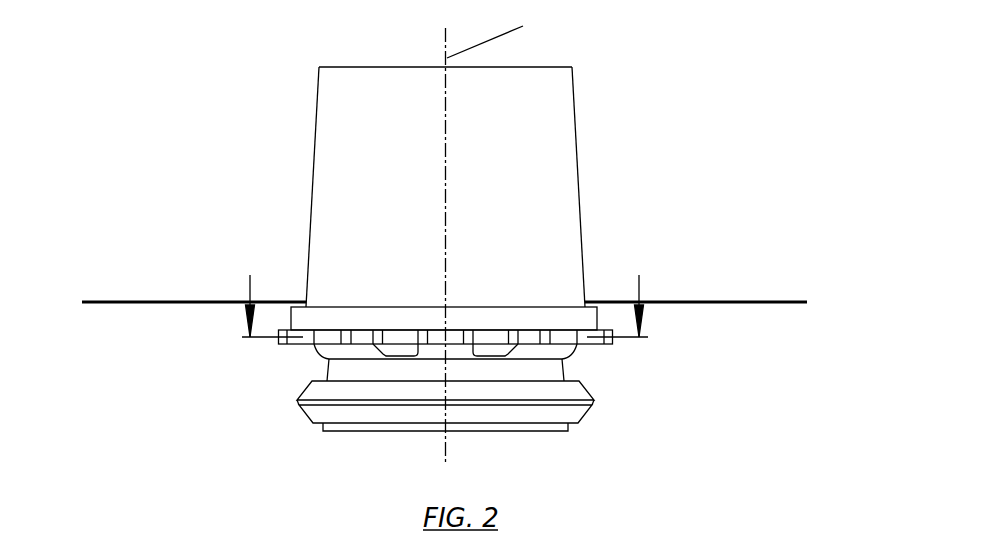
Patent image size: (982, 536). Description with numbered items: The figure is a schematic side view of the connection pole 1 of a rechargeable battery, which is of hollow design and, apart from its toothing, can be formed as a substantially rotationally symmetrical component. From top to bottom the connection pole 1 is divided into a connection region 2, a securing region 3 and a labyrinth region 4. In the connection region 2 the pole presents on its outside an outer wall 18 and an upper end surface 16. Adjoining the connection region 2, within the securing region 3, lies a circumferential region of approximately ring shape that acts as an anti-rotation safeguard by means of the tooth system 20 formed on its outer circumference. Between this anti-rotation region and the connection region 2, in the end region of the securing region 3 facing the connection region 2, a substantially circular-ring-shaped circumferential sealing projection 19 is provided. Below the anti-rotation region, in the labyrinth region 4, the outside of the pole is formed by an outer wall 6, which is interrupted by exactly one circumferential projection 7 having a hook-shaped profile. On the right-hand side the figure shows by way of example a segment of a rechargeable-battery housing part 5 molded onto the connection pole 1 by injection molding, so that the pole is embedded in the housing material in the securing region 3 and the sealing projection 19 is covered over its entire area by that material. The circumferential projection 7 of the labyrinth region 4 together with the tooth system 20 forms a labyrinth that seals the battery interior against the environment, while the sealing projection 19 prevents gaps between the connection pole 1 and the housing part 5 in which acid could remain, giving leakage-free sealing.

The connection pole 1 is at (349, 37).
The connection region 2 is at (285, 57).
The securing region 3 is at (213, 310).
The labyrinth region 4 is at (283, 382).
The rechargeable-battery housing part 5 is at (193, 302).
The outer wall 6 is at (580, 368).
The circumferential projection 7 is at (593, 402).
The upper end surface 16 is at (572, 67).
The outer wall 18 is at (566, 133).
The circumferential sealing projection 19 is at (583, 320).
The tooth system 20 is at (588, 345).